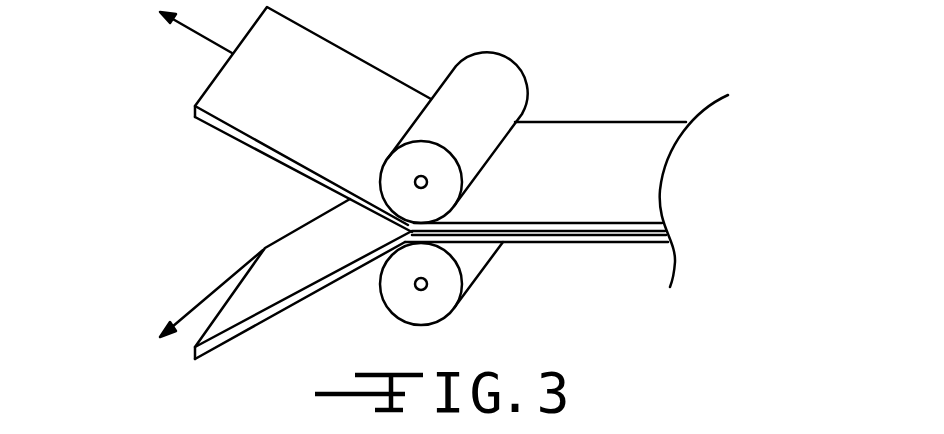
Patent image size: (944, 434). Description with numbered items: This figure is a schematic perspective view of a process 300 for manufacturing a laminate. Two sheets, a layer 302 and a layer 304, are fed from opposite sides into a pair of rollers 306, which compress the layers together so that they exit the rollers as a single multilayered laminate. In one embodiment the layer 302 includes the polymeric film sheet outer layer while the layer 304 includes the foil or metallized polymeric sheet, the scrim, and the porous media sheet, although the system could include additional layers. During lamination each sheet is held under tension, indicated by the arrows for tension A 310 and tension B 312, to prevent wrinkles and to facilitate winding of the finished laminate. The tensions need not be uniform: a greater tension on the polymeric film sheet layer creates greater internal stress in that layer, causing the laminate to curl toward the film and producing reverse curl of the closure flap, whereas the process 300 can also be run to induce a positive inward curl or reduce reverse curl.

The process of manufacturing a laminate 300 is at (759, 132).
The layer 302 is at (240, 307).
The layer 304 is at (362, 77).
The rollers 306 is at (512, 75).
The tension A 310 is at (129, 5).
The tension B 312 is at (135, 340).